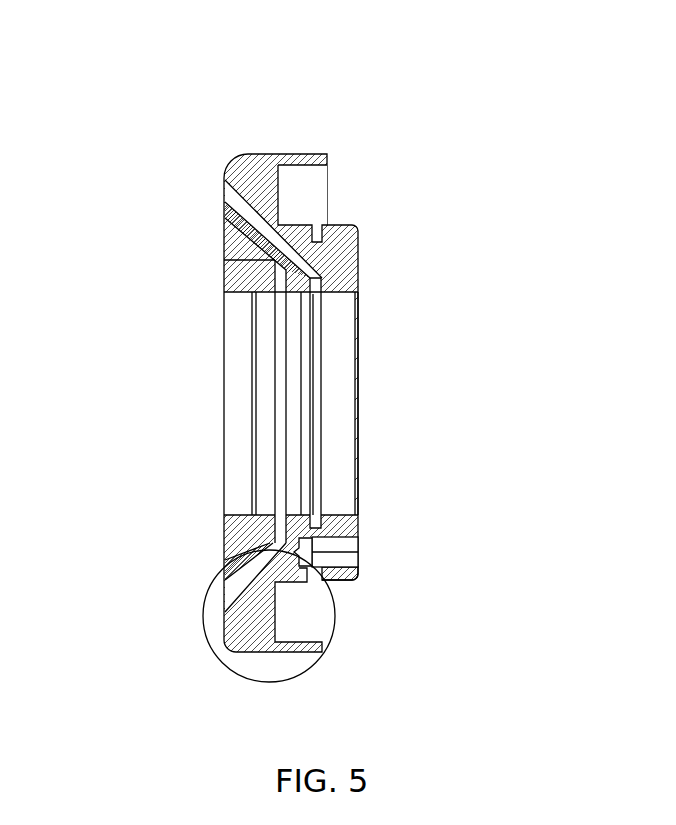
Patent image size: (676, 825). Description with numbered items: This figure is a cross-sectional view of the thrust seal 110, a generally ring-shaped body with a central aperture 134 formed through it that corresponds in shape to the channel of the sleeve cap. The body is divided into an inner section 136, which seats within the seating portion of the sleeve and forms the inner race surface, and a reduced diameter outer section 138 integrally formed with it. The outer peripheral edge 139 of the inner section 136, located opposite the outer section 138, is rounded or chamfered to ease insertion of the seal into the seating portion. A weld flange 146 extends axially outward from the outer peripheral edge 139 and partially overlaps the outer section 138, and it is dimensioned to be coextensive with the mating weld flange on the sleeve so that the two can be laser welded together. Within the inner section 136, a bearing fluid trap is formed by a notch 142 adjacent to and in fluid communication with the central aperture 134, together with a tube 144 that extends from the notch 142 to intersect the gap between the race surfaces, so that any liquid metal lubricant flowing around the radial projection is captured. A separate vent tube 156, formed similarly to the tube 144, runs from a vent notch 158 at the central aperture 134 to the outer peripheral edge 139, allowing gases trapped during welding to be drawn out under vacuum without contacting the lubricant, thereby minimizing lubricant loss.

The thrust seal 110 is at (380, 185).
The central aperture 134 is at (360, 303).
The inner section 136 is at (311, 120).
The outer section 138 is at (345, 586).
The outer peripheral edge 139 is at (256, 150).
The notch 142 is at (223, 286).
The tube 144 is at (222, 232).
The weld flange 146 is at (322, 655).
The vent tube 156 is at (312, 520).
The vent notch 158 is at (222, 195).